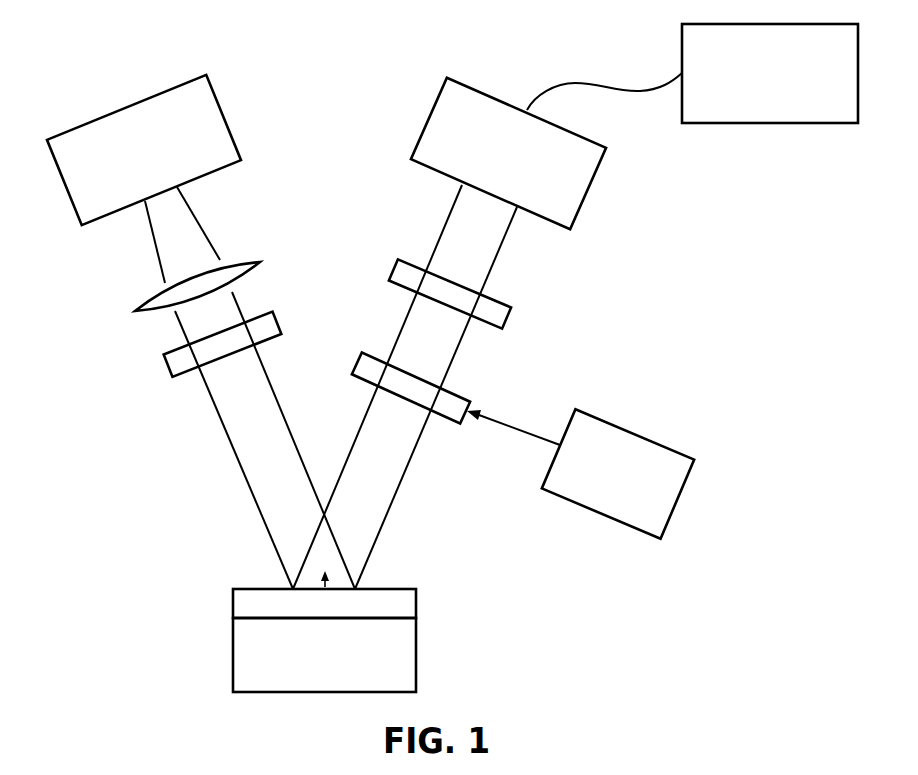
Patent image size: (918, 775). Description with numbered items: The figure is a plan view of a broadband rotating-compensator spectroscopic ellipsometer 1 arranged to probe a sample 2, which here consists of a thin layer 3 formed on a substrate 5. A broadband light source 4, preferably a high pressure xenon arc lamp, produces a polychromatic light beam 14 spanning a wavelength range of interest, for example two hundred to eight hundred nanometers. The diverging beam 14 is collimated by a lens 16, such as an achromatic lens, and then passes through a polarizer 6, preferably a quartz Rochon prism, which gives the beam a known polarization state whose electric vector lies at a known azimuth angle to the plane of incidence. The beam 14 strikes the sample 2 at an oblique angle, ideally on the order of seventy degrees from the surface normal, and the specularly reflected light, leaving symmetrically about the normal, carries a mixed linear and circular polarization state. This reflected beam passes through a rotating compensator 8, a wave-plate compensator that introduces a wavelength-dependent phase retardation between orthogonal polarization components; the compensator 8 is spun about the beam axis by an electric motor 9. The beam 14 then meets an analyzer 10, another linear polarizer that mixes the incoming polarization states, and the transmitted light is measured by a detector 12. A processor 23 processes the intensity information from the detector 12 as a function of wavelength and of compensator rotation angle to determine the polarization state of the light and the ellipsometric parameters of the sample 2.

The ellipsometer 1 is at (733, 309).
The sample 2 is at (340, 611).
The thin layer 3 is at (415, 603).
The broadband light source 4 is at (223, 117).
The substrate 5 is at (415, 640).
The polarizer 6 is at (277, 317).
The rotating compensator 8 is at (458, 392).
The electric motor 9 is at (680, 499).
The analyzer 10 is at (502, 300).
The detector 12 is at (597, 170).
The light beam 14 is at (283, 412).
The lens 16 is at (243, 260).
The processor 23 is at (738, 123).